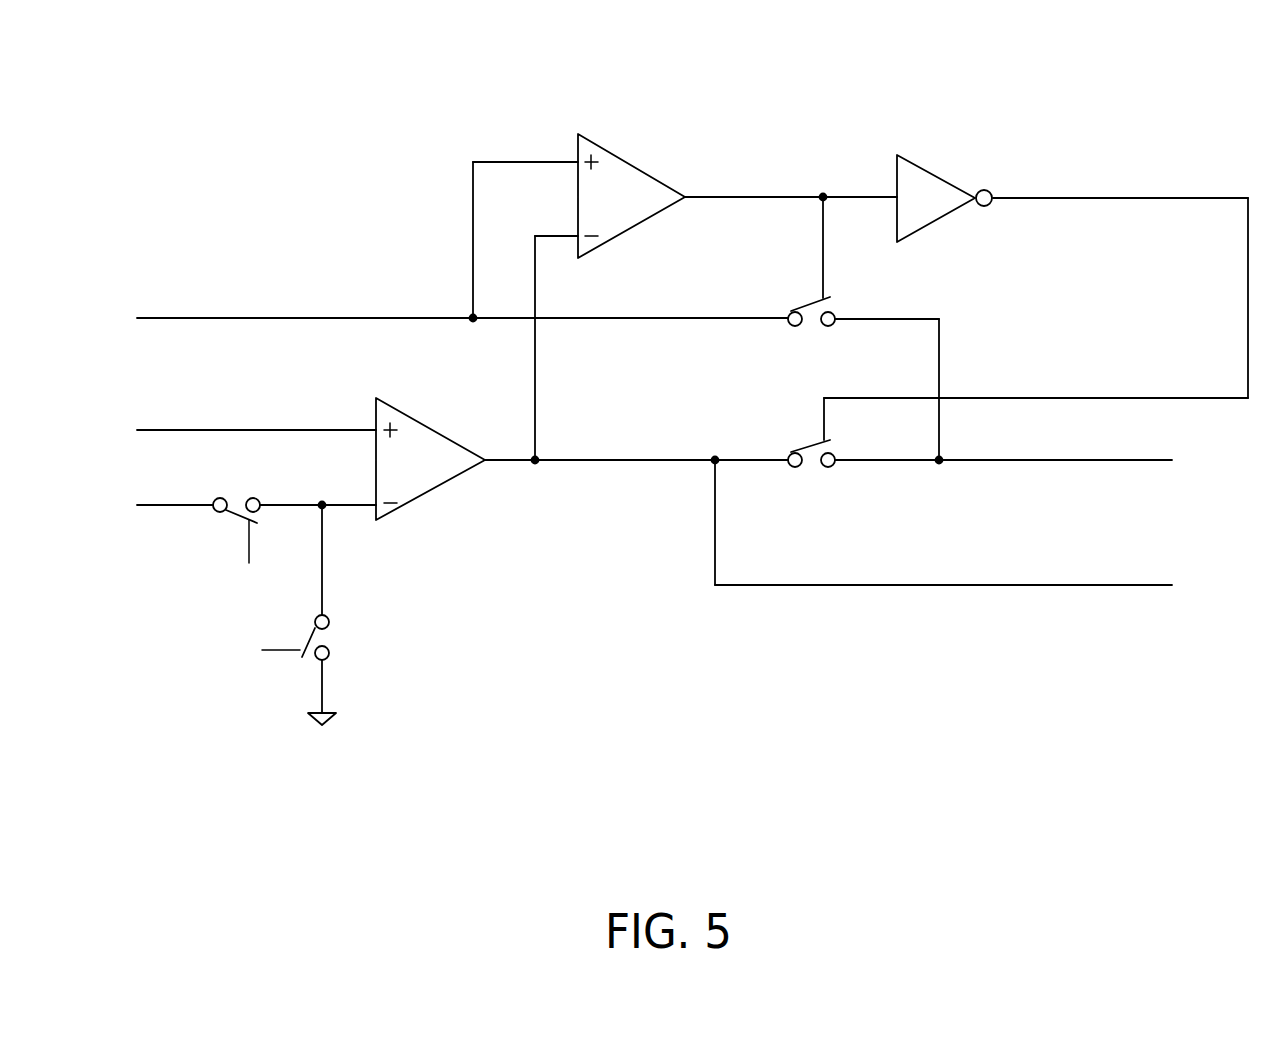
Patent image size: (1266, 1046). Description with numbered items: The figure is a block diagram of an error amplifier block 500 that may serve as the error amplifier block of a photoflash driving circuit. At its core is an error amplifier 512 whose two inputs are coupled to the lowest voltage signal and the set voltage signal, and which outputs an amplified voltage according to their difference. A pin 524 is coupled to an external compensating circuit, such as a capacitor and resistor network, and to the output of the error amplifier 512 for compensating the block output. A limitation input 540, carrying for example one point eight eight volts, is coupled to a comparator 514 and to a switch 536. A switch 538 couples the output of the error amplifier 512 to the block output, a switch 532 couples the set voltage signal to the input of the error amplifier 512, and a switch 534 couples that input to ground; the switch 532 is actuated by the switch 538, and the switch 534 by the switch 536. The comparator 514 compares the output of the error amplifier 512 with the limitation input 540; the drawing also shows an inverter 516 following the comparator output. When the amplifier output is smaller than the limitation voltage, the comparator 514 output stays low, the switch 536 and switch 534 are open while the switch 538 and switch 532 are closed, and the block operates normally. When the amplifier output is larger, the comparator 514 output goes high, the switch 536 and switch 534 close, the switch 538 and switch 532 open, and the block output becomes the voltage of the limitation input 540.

The error amplifier block 500 is at (1108, 116).
The error amplifier 512 is at (414, 418).
The comparator 514 is at (624, 158).
The inverter 516 is at (928, 170).
The pin 524 is at (873, 587).
The switch 532 is at (230, 520).
The switch 534 is at (329, 657).
The switch 536 is at (789, 322).
The switch 538 is at (789, 465).
The limitation input 540 is at (292, 318).